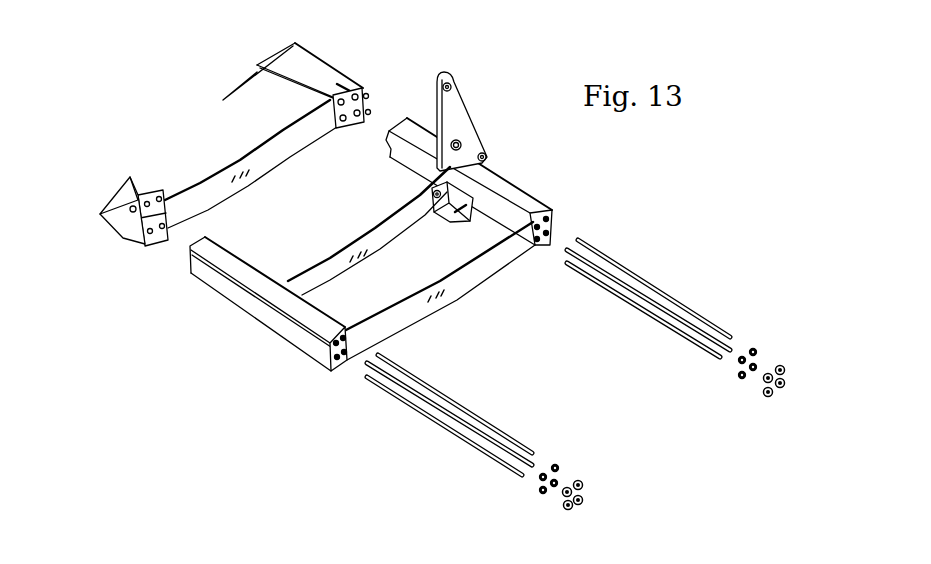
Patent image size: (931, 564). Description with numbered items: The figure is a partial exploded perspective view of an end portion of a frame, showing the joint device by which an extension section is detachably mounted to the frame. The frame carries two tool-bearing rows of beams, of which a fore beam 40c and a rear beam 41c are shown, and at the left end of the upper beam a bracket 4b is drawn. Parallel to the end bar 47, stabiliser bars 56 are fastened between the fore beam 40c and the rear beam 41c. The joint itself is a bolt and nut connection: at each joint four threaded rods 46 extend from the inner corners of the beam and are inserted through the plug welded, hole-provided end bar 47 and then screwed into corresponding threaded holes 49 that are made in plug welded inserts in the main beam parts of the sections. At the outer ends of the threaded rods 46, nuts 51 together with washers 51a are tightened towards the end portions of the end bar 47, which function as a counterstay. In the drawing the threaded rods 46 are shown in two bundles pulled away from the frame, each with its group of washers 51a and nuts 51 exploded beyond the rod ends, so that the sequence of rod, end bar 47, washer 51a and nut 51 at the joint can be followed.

The fore beam 40c is at (290, 57).
The threaded hole 49 is at (368, 110).
The rear beam 41c is at (134, 182).
The mounting bracket 4b is at (147, 250).
The stabiliser bar 56 is at (305, 133).
The end bar 47 is at (510, 261).
The threaded rod 46 is at (460, 437).
The washer 51a is at (556, 451).
The nut 51 is at (590, 480).